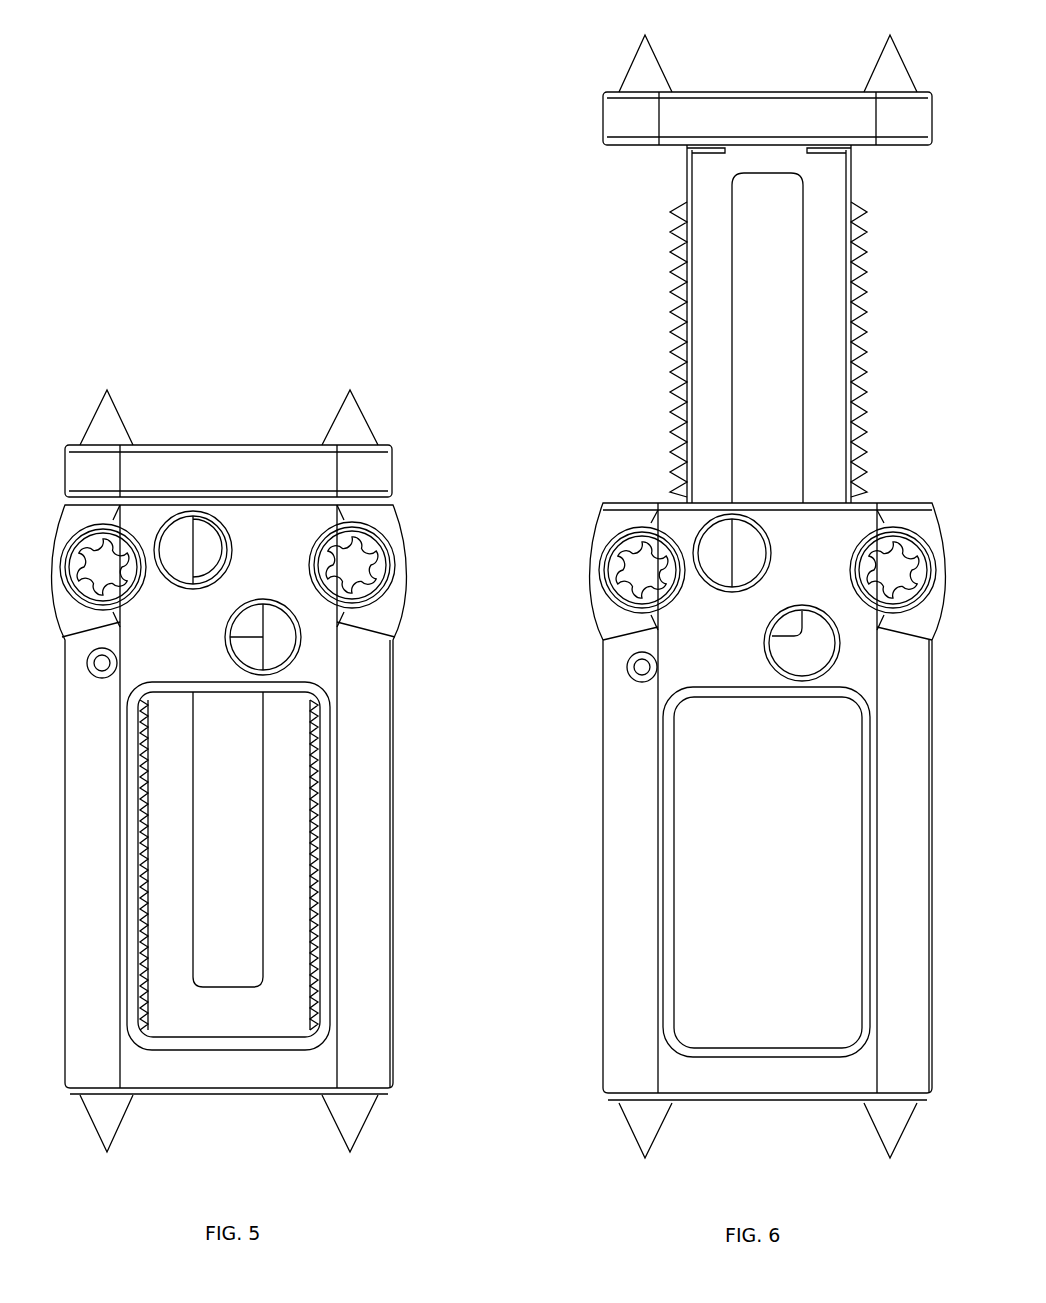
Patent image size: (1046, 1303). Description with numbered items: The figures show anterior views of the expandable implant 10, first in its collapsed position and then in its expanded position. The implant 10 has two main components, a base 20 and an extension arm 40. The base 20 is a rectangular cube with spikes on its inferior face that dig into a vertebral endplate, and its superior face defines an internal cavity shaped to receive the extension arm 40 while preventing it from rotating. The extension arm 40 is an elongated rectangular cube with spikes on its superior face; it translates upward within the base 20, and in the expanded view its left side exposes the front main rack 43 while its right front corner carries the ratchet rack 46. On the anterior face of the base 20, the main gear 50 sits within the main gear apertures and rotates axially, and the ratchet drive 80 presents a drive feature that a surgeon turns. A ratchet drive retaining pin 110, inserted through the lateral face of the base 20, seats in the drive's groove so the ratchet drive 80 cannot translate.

In FIG. 5, the expandable implant 10 is at (270, 315).
In FIG. 6, the expandable implant 10 is at (557, 97).
In FIG. 5, the base 20 is at (365, 1025).
In FIG. 6, the base 20 is at (632, 1047).
In FIG. 5, the extension arm 40 is at (235, 462).
In FIG. 6, the extension arm 40 is at (632, 117).
In FIG. 6, the front main rack 43 is at (863, 240).
In FIG. 6, the ratchet rack 46 is at (670, 283).
In FIG. 5, the main gear 50 is at (353, 555).
In FIG. 6, the main gear 50 is at (895, 572).
In FIG. 5, the ratchet drive 80 is at (103, 572).
In FIG. 6, the ratchet drive 80 is at (632, 572).
In FIG. 5, the ratchet drive retaining pin 110 is at (112, 670).
In FIG. 6, the ratchet drive retaining pin 110 is at (634, 676).